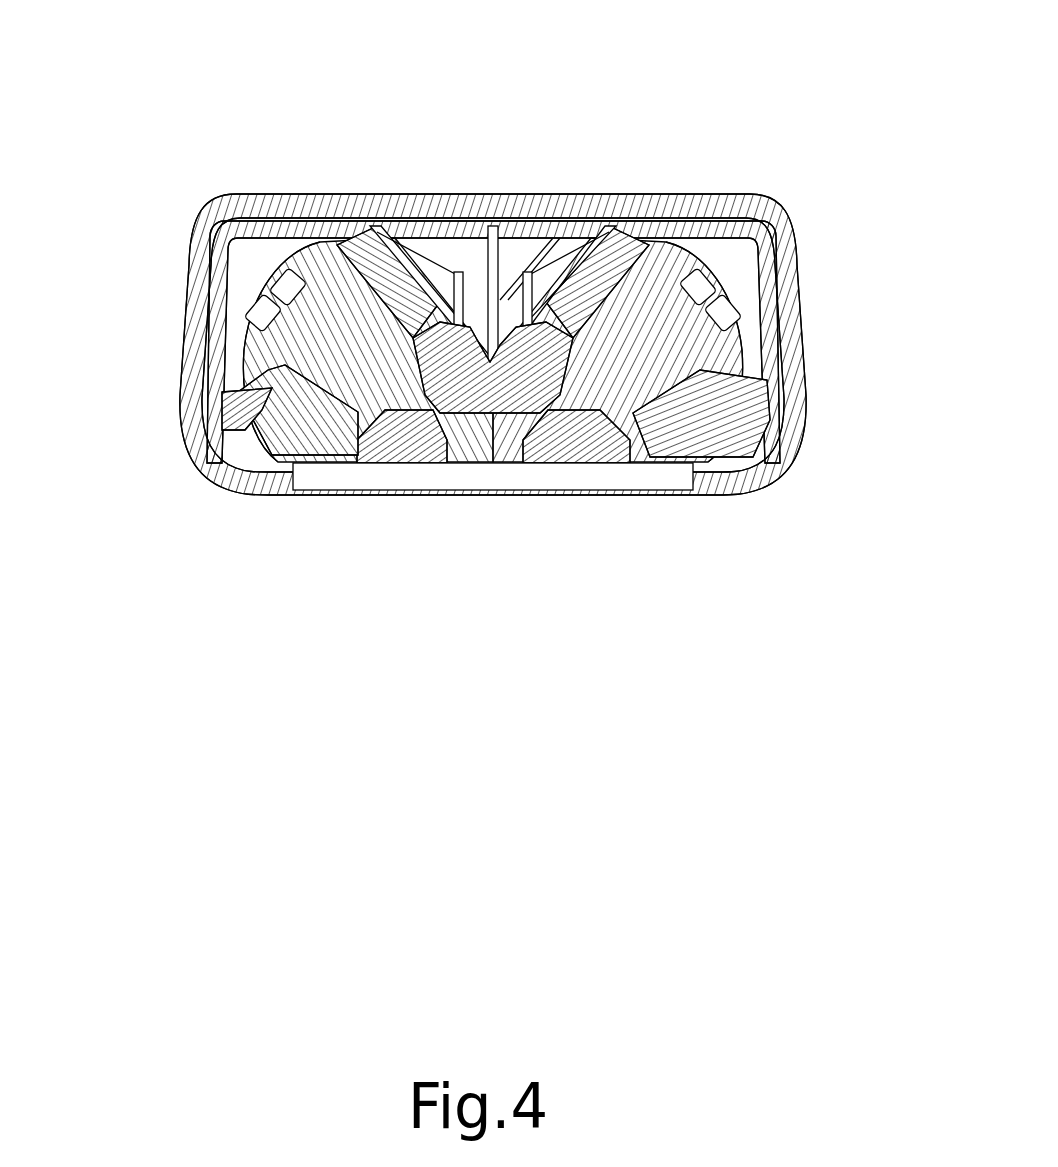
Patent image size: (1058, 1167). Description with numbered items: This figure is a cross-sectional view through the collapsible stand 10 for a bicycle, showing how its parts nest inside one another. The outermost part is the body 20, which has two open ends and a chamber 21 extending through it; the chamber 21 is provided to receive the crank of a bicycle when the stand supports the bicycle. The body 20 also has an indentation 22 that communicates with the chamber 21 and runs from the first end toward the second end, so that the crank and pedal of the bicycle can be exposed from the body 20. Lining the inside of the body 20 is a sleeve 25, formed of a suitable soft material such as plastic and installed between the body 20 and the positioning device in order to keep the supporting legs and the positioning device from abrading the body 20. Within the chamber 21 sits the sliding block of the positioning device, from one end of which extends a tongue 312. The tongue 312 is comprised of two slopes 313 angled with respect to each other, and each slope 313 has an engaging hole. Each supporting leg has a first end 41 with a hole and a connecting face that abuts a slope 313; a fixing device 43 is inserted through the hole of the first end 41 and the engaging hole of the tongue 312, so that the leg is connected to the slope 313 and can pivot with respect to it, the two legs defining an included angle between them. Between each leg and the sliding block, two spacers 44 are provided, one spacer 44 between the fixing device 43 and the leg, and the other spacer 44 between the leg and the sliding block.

The collapsible stand 10 is at (785, 100).
The body 20 is at (485, 220).
The chamber 21 is at (620, 232).
The indentation 22 is at (587, 473).
The sleeve 25 is at (372, 194).
The first end 41 is at (273, 428).
The fixing device 43 is at (245, 345).
The spacer 44 is at (273, 392).
The tongue 312 is at (493, 460).
The slope 313 is at (335, 460).